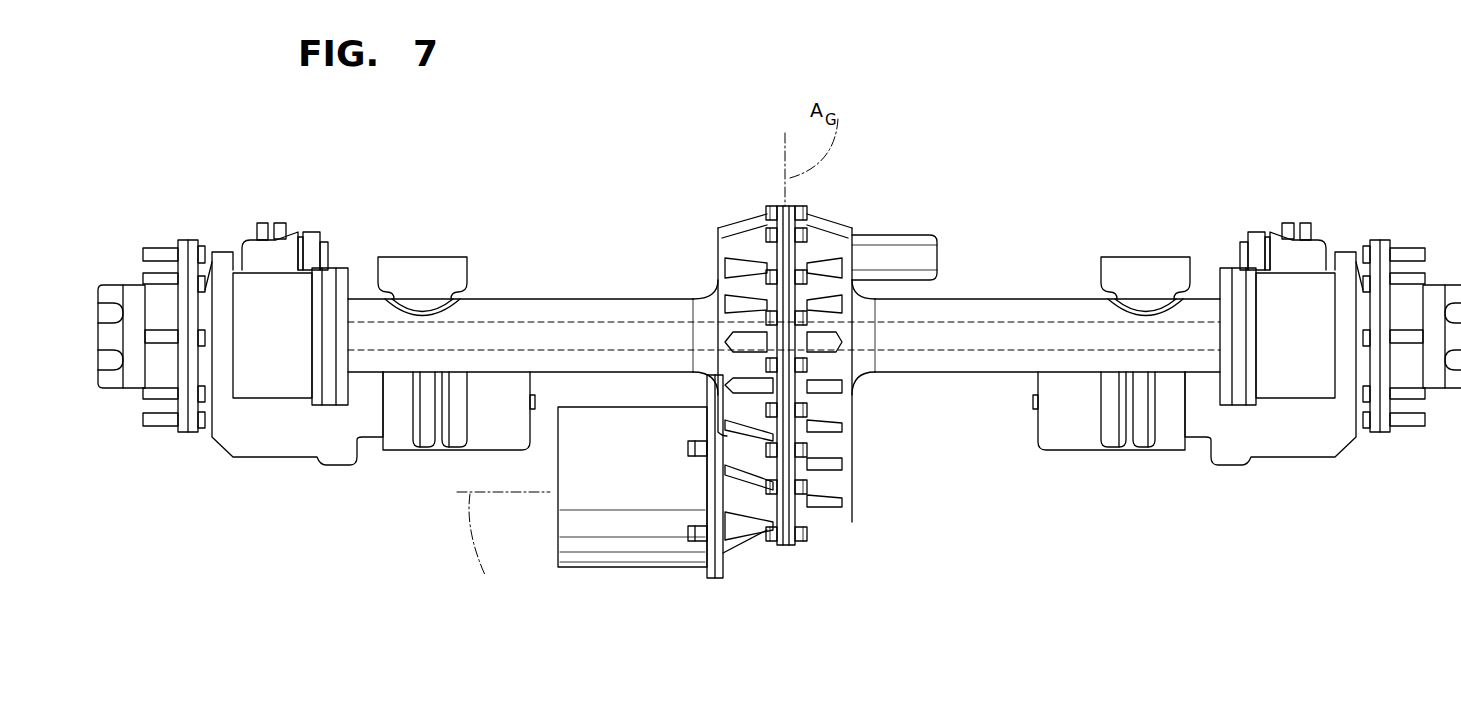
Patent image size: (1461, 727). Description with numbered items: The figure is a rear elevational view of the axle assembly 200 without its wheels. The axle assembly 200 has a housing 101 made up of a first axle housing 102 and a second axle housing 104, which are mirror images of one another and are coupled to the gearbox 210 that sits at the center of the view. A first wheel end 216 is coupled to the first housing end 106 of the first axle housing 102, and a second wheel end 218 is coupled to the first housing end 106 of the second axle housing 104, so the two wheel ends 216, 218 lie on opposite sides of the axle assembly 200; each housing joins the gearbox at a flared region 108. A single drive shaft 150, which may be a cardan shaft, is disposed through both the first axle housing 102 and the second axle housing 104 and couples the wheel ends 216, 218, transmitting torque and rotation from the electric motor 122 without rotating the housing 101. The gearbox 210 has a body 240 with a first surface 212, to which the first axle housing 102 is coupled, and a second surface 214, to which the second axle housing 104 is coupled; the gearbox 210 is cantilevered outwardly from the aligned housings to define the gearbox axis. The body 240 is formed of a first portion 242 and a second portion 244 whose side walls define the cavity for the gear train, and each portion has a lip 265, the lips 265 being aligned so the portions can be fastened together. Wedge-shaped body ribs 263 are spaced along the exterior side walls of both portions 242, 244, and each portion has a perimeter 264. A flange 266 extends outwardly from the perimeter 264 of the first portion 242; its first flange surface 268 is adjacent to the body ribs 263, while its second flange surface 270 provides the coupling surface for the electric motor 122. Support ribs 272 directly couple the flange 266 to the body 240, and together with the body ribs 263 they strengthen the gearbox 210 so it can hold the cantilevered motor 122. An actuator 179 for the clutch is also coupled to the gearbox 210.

The housing 101 is at (500, 297).
The first axle housing 102 is at (553, 310).
The second axle housing 104 is at (980, 315).
The first housing end 106 is at (340, 265).
The axle housing flange 108 is at (698, 297).
The electric motor 122 is at (638, 558).
The drive shaft 150 is at (1052, 322).
The actuator 179 is at (928, 258).
The axle assembly 200 is at (1095, 182).
The gearbox 210 is at (769, 366).
The first surface 212 is at (715, 278).
The second surface 214 is at (838, 466).
The first wheel end 216 is at (218, 225).
The second wheel end 218 is at (1365, 232).
The body 240 is at (848, 232).
The first portion 242 is at (721, 232).
The second portion 244 is at (845, 512).
The body ribs 263 is at (732, 342).
The perimeter 264 is at (735, 440).
The lip 265 is at (750, 287).
The flange 266 is at (723, 578).
The first flange surface 268 is at (727, 565).
The second flange surface 270 is at (700, 562).
The support rib 272 is at (738, 542).